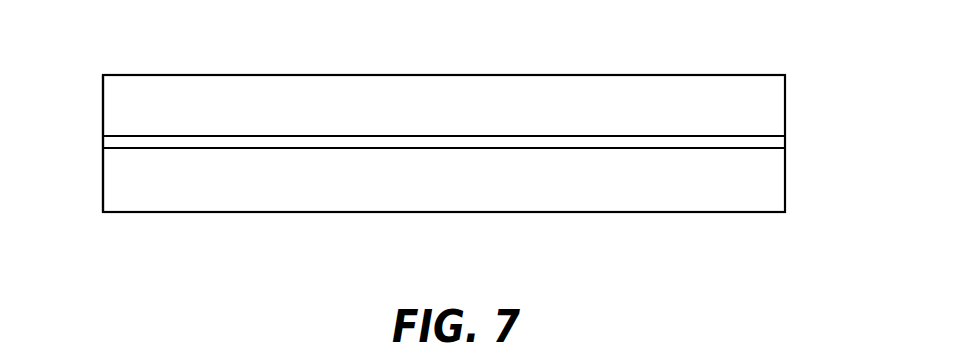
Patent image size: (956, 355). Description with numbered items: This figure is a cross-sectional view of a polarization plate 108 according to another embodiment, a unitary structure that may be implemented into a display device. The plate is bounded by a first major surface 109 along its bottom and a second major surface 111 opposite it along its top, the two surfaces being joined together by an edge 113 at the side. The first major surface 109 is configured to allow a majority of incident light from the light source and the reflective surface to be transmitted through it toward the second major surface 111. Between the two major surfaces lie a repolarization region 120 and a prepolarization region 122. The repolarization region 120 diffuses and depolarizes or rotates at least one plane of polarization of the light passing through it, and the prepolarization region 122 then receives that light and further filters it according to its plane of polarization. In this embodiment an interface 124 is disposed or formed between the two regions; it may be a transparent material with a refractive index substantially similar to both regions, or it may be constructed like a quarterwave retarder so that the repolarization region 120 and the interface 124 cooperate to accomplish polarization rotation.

The polarization plate 108 is at (804, 113).
The second major surface 111 is at (527, 75).
The prepolarization region 122 is at (762, 82).
The repolarization region 120 is at (757, 204).
The interface 124 is at (493, 137).
The edge 113 is at (102, 142).
The first major surface 109 is at (418, 213).